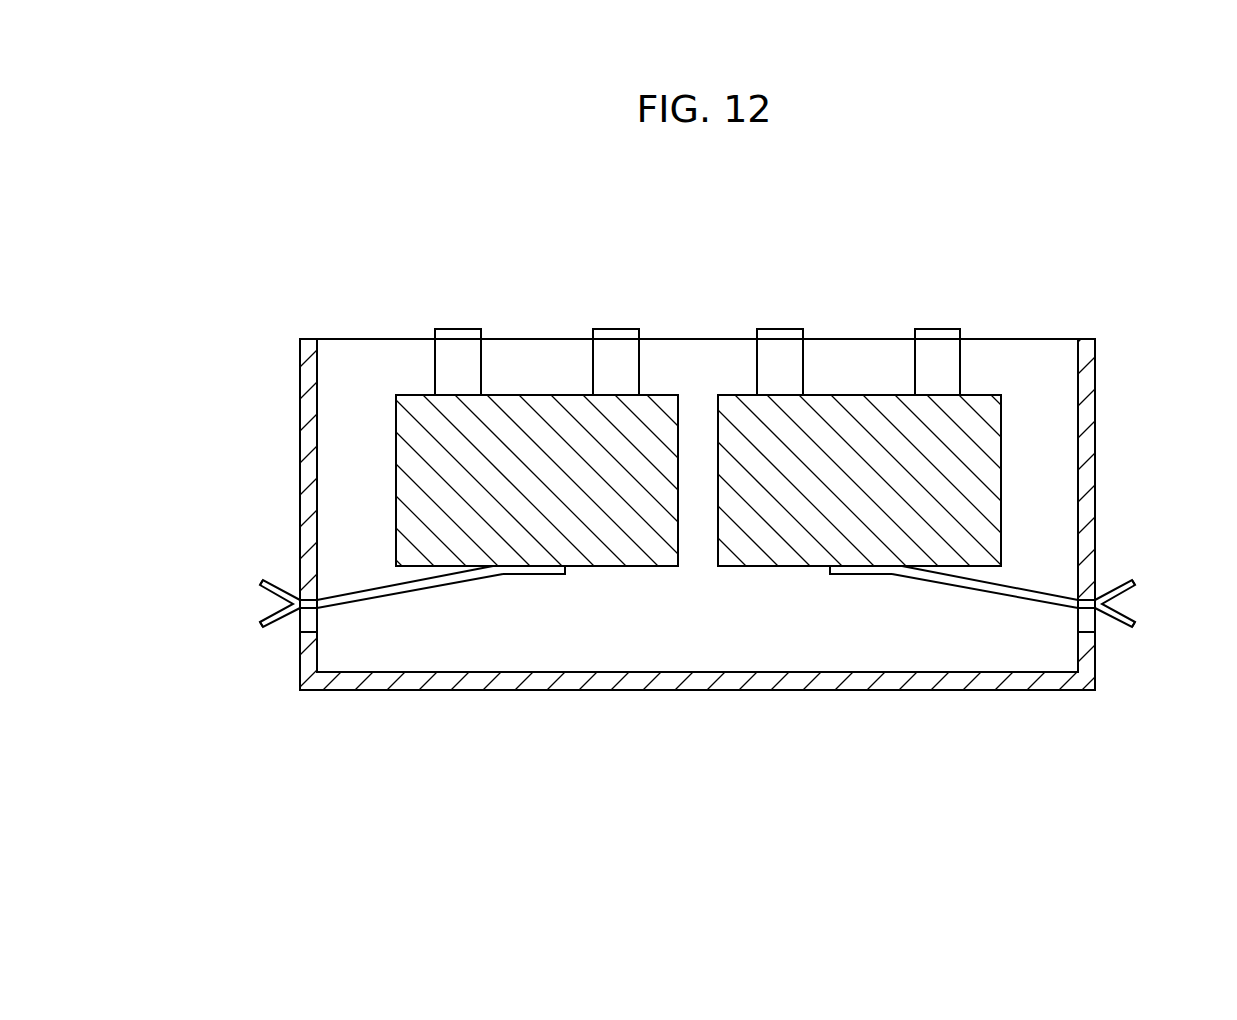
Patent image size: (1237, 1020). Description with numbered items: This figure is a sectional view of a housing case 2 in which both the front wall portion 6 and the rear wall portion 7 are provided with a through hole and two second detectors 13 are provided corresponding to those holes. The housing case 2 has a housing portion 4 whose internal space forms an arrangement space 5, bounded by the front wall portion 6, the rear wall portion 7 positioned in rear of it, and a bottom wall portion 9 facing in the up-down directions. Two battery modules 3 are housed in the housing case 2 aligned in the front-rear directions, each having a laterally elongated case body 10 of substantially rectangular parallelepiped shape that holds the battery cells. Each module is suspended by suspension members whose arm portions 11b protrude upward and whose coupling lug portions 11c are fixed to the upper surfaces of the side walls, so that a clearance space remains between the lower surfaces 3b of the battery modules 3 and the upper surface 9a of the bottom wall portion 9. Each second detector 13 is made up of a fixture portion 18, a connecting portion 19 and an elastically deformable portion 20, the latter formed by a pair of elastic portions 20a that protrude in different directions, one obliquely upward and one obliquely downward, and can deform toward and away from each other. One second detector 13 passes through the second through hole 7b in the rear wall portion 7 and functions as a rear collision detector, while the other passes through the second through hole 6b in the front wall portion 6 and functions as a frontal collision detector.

The housing case 2 is at (1090, 375).
The battery module 3 is at (528, 396).
The lower surface 3b is at (641, 567).
The housing portion 4 is at (1087, 407).
The arrangement space 5 is at (1028, 400).
The front wall portion 6 is at (305, 407).
The second through hole 6b is at (300, 628).
The rear wall portion 7 is at (1093, 437).
The second through hole 7b is at (1095, 628).
The bottom wall portion 9 is at (755, 690).
The upper surface 9a is at (917, 672).
The case body 10 is at (568, 396).
The arm portion 11b is at (434, 372).
The coupling lug portion 11c is at (450, 328).
The second detector 13 is at (385, 582).
The fixture portion 18 is at (527, 575).
The connecting portion 19 is at (403, 596).
The elastically deformable portion 20 is at (258, 592).
The elastic portion 20a is at (265, 583).